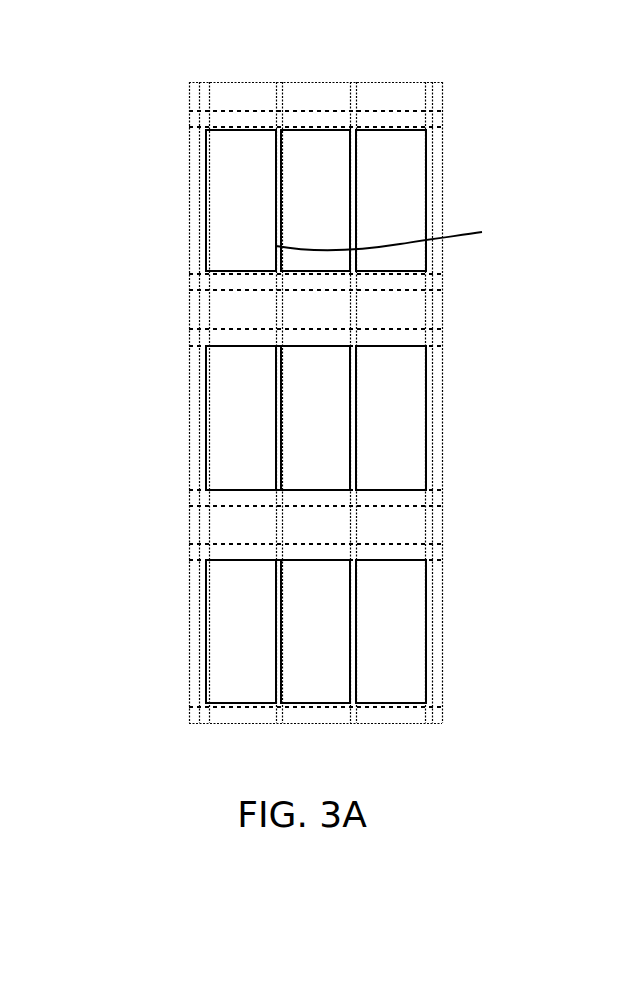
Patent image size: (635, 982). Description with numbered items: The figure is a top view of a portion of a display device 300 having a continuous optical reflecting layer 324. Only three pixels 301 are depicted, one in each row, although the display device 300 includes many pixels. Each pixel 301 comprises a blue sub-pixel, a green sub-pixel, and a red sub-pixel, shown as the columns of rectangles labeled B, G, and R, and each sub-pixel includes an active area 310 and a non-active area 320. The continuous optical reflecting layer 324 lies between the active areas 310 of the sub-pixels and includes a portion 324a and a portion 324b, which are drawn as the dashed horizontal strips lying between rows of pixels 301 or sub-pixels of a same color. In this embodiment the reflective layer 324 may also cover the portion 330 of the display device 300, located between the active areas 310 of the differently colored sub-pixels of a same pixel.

The display device 300 is at (78, 60).
The pixel 301 is at (172, 306).
The active area 310 is at (232, 598).
The non-active area 320 is at (232, 712).
The continuous optical reflecting layer 324 is at (439, 93).
The portion of reflective layer 324a is at (443, 492).
The portion of reflective layer 324b is at (189, 542).
The portion 330 is at (412, 222).